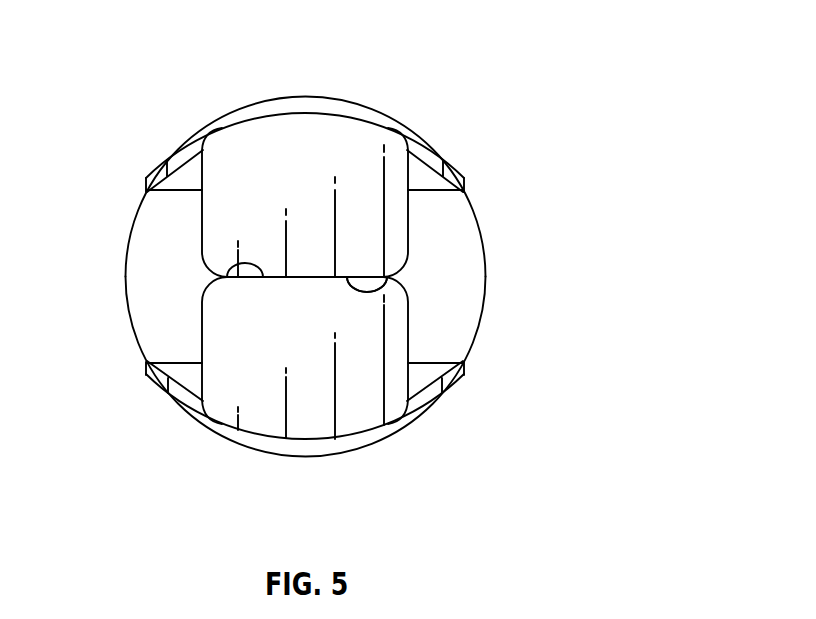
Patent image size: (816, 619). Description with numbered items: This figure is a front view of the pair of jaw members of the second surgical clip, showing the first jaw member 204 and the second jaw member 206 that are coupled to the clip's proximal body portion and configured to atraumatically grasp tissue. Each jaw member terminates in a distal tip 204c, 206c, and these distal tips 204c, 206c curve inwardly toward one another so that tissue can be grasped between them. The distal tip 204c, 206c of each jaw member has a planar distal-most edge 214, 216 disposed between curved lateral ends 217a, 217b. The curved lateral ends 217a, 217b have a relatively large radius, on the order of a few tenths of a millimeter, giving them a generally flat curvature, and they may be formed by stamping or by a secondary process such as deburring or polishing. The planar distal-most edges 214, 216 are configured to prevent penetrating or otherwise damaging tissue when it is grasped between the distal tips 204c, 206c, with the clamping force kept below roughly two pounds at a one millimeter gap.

The first jaw member 204 is at (262, 103).
The distal tip 204c is at (332, 145).
The second jaw member 206 is at (297, 457).
The distal tip 206c is at (358, 388).
The planar distal-most edge 214 is at (389, 284).
The planar distal-most edge 216 is at (243, 264).
The curved lateral end 217a is at (228, 277).
The curved lateral end 217b is at (386, 278).